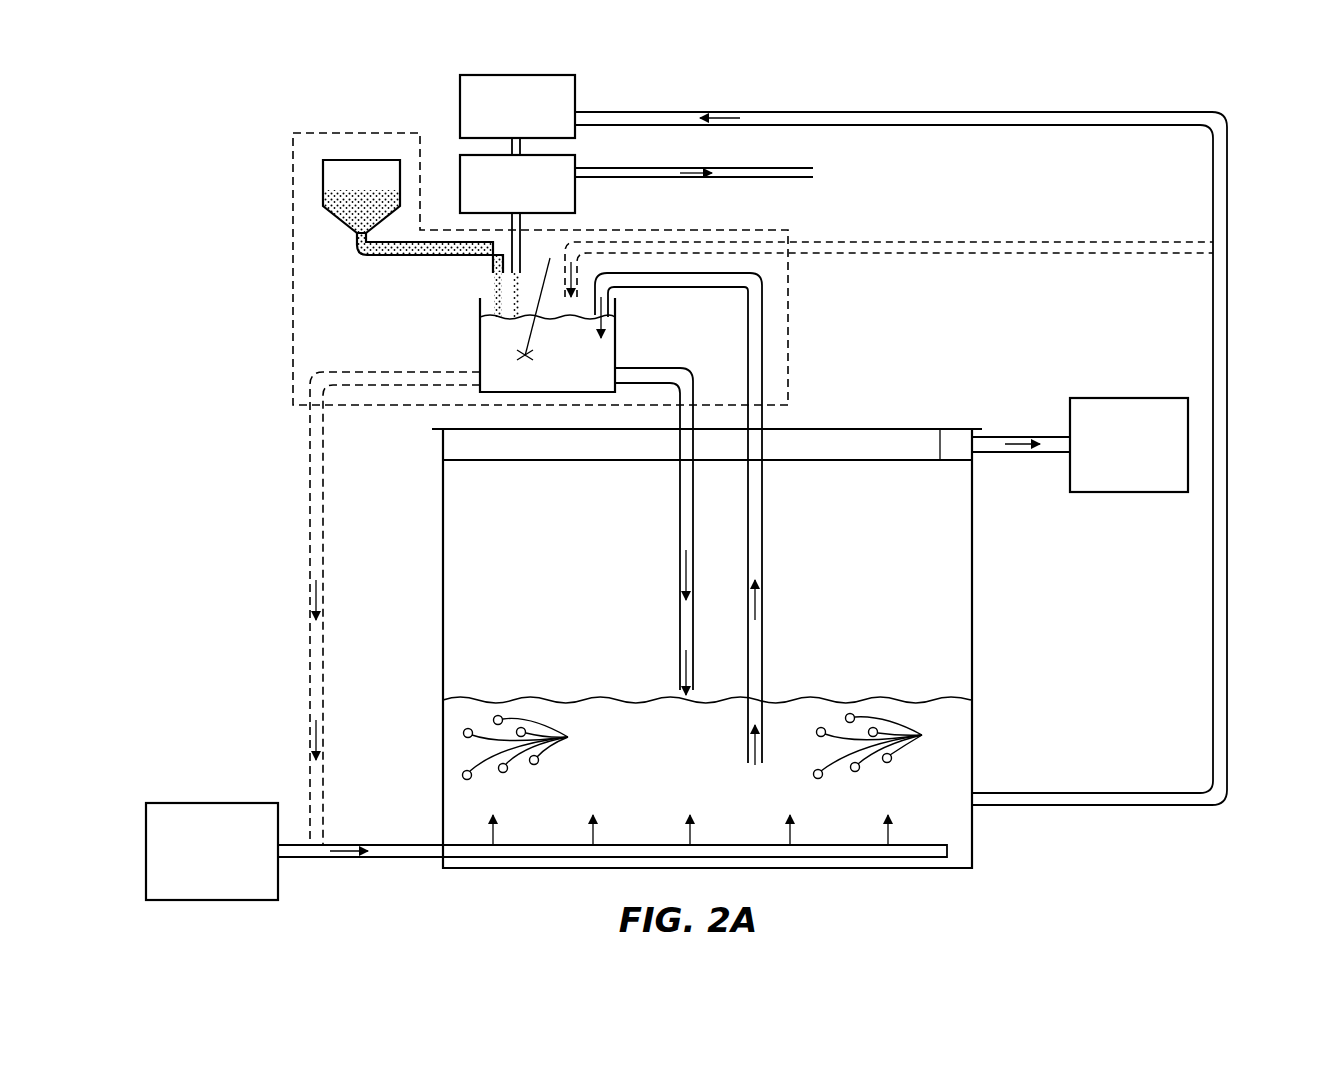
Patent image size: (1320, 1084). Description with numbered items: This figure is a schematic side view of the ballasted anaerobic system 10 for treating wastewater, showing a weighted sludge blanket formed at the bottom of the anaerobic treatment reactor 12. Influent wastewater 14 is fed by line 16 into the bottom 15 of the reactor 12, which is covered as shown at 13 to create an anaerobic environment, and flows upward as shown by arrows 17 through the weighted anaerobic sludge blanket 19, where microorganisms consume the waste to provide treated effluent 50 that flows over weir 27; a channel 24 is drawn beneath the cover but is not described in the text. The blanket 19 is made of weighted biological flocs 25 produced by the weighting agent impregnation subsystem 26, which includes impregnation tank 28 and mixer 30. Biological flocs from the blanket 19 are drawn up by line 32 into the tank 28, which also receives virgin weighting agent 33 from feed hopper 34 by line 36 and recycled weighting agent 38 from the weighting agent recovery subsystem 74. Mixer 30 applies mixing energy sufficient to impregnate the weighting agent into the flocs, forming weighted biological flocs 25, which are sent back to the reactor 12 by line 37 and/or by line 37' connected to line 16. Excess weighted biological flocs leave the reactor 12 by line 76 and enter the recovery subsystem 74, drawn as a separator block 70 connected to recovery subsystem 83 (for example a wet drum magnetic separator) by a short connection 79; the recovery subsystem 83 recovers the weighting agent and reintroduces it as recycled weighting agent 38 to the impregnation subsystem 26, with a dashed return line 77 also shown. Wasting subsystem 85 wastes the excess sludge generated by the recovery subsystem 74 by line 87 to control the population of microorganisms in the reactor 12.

The ballasted anaerobic system 10 is at (1028, 92).
The anaerobic treatment reactor 12 is at (972, 643).
The cover 13 is at (822, 428).
The influent wastewater 14 is at (200, 890).
The bottom 15 is at (972, 850).
The line 16 is at (377, 843).
The arrows 17 is at (494, 834).
The weighted anaerobic sludge blanket 19 is at (894, 698).
The effluent launder 24 is at (829, 464).
The weighted biological flocs 25 is at (708, 747).
The weighting agent impregnation subsystem 26 is at (306, 356).
The weir 27 is at (945, 440).
The impregnation tank 28 is at (486, 387).
The mixer 30 is at (533, 333).
The line 32 is at (655, 290).
The virgin weighting agent 33 is at (352, 230).
The feed hopper 34 is at (371, 190).
The line 36 is at (388, 257).
The line 37 is at (666, 514).
The line 37' is at (395, 587).
The recycled weighting agent 38 is at (522, 283).
The treated effluent 50 is at (1117, 481).
The separator 70 is at (505, 130).
The weighting agent recovery subsystem 74 is at (1238, 284).
The line 76 is at (1153, 800).
The return pipe 77 is at (1043, 256).
The separator outlet pipe 79 is at (525, 144).
The recovery subsystem 83 is at (505, 207).
The wasting subsystem 85 is at (668, 164).
The line 87 is at (620, 180).